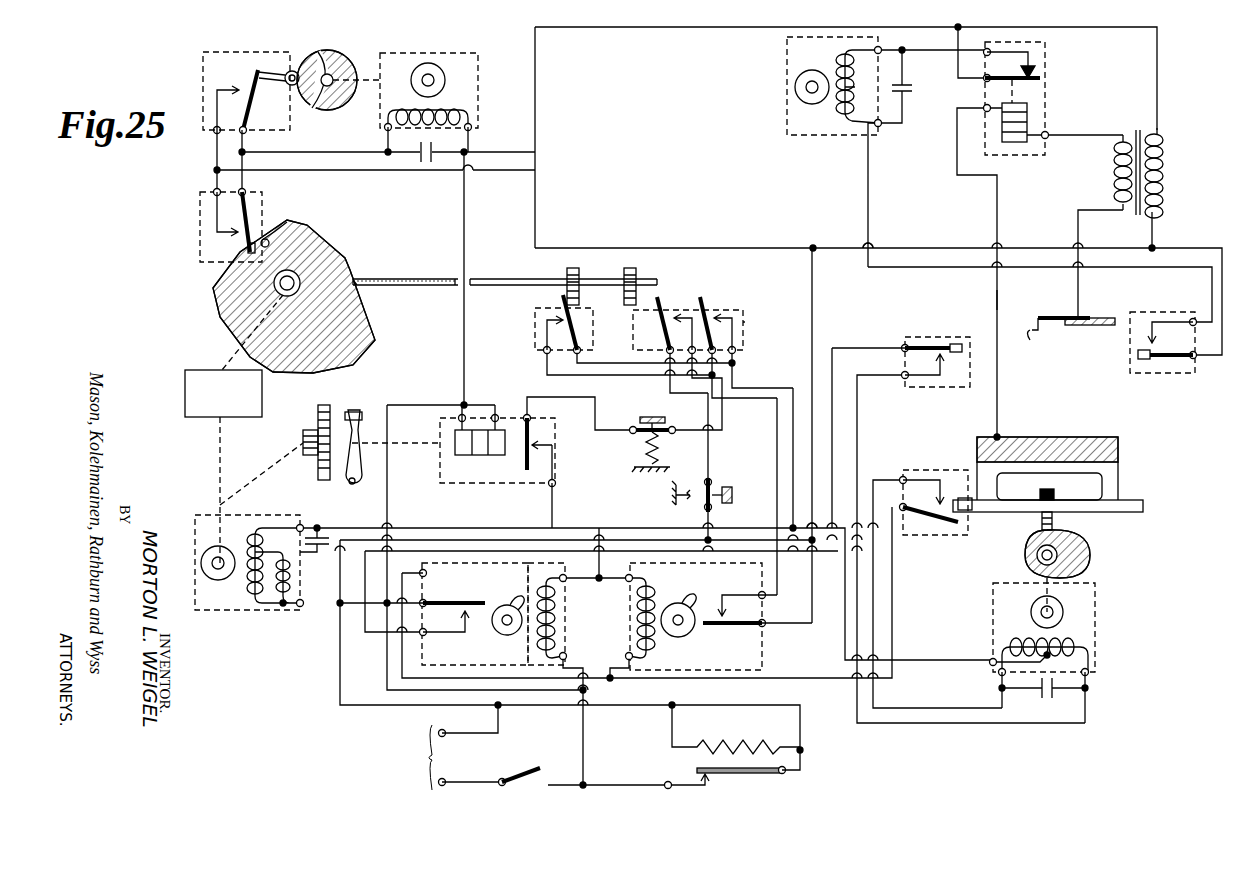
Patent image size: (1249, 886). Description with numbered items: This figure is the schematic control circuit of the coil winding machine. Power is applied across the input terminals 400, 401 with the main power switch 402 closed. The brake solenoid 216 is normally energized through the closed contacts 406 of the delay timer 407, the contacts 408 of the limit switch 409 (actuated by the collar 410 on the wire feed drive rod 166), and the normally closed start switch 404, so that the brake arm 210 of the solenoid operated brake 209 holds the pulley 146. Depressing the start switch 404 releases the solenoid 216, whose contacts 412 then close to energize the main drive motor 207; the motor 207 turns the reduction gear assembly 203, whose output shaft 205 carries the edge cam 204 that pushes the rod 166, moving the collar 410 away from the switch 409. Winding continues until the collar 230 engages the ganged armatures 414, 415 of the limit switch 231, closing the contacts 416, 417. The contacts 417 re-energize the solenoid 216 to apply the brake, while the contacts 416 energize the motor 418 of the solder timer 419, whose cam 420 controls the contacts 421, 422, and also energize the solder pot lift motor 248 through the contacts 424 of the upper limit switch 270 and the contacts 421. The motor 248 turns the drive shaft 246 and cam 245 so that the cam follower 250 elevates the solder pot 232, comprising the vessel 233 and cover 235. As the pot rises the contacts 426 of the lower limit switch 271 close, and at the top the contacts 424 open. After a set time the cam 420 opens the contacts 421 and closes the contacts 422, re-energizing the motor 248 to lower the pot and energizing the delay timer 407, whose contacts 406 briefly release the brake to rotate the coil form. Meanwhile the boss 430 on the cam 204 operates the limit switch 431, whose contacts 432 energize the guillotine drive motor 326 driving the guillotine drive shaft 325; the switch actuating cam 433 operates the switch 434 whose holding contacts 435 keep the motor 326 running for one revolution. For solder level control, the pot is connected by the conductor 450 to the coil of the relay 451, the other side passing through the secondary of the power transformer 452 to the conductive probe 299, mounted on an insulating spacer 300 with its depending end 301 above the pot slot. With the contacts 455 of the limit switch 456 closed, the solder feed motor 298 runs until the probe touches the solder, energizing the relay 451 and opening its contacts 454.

The pulley 146 is at (318, 412).
The wire feed drive rod 166 is at (452, 279).
The reduction gear assembly 203 is at (200, 370).
The edge cam 204 is at (213, 300).
The output shaft 205 is at (291, 290).
The main drive motor 207 is at (208, 616).
The solenoid operated brake 209 is at (348, 389).
The brake arm 210 is at (392, 476).
The pusher type solenoid 216 is at (468, 477).
The collar 230 is at (638, 272).
The limit switch 231 is at (752, 316).
The solder pot 232 is at (1128, 457).
The vessel 233 is at (1070, 452).
The cover 235 is at (1018, 437).
The cam 245 is at (1090, 556).
The drive shaft 246 is at (1037, 556).
The solder pot lift motor 248 is at (1104, 617).
The cam follower 250 is at (1058, 520).
The upper limit switch 270 is at (945, 318).
The lower limit switch 271 is at (955, 470).
The solder feed motor 298 is at (782, 95).
The conductive probe 299 is at (1052, 312).
The insulating spacer 300 is at (1103, 316).
The depending end 301 is at (1036, 342).
The guillotine drive shaft 325 is at (297, 70).
The guillotine drive motor 326 is at (485, 65).
The input power terminal 400 is at (445, 732).
The input power terminal 401 is at (445, 781).
The main power switch 402 is at (530, 785).
The start switch 404 is at (652, 415).
The normally closed contacts 406 is at (720, 600).
The delay timer 407 is at (623, 633).
The normally closed contacts 408 is at (534, 311).
The limit switch 409 is at (536, 340).
The collar 410 is at (580, 270).
The normally closed contacts 412 is at (546, 473).
The ganged armature 414 is at (665, 318).
The ganged armature 415 is at (707, 300).
The contacts 416 is at (663, 308).
The contacts 417 is at (708, 312).
The solder timer motor 418 is at (515, 632).
The solder timer 419 is at (570, 614).
The cam 420 is at (493, 632).
The normally closed contacts 421 is at (446, 619).
The normally open contacts 422 is at (465, 600).
The normally closed contacts 424 is at (930, 365).
The normally open contacts 426 is at (933, 489).
The boss 430 is at (293, 228).
The limit switch 431 is at (193, 221).
The normally open contacts 432 is at (237, 232).
The switch actuating cam 433 is at (357, 56).
The switch 434 is at (275, 40).
The normally open contacts 435 is at (232, 88).
The conductor 450 is at (997, 298).
The relay 451 is at (1048, 100).
The power transformer 452 is at (1136, 128).
The normally closed contacts 454 is at (1034, 70).
The normally open contacts 455 is at (1135, 347).
The limit switch 456 is at (1195, 296).